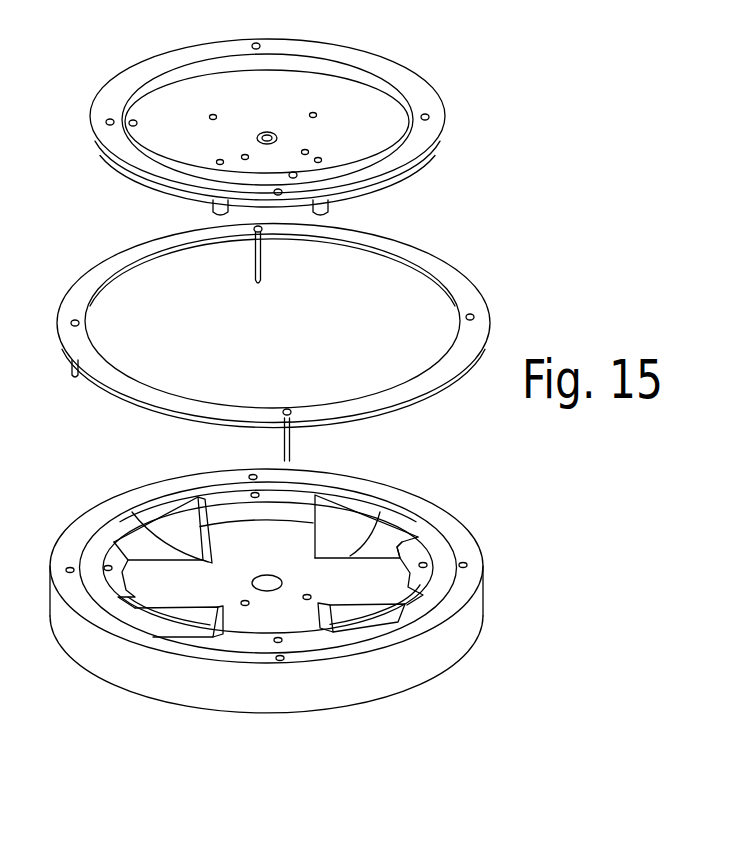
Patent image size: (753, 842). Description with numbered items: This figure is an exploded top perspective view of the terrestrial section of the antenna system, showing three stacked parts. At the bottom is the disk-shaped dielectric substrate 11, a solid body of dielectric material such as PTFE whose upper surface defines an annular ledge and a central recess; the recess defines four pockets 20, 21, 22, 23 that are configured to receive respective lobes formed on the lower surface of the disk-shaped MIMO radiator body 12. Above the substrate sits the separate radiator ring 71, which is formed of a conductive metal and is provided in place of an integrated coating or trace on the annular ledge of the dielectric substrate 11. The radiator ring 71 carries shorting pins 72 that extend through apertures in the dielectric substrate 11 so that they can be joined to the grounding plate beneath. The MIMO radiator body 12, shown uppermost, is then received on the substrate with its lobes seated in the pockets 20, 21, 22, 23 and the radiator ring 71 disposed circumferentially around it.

The dielectric substrate 11 is at (499, 609).
The MIMO radiator body 12 is at (459, 96).
The pocket 20 is at (131, 532).
The pocket 21 is at (187, 615).
The pocket 22 is at (355, 615).
The pocket 23 is at (388, 527).
The radiator ring 71 is at (467, 294).
The shorting pins 72 is at (267, 268).